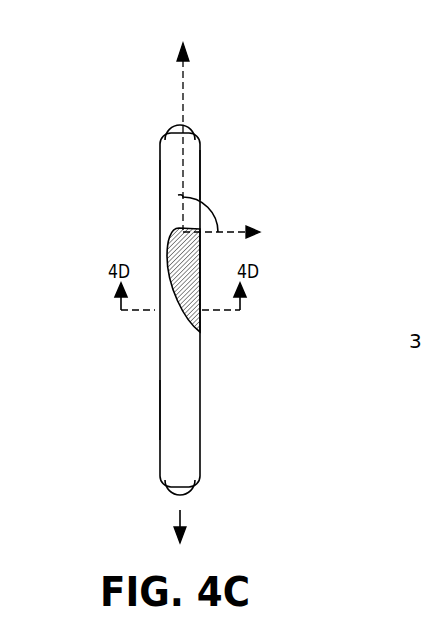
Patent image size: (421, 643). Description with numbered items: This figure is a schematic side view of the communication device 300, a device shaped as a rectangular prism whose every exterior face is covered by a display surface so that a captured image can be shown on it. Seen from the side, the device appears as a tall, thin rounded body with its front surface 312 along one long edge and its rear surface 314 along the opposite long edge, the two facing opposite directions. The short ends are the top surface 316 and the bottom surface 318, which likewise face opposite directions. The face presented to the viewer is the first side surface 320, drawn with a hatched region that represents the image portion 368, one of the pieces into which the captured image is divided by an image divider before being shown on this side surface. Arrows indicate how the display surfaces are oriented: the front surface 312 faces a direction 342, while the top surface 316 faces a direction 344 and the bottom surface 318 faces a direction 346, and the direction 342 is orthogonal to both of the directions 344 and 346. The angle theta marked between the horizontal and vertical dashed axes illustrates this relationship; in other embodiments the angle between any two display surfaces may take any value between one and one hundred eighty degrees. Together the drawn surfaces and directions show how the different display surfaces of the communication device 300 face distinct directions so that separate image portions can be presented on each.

The communication device 300 is at (128, 132).
The front surface 312 is at (200, 168).
The rear surface 314 is at (160, 188).
The top surface 316 is at (187, 132).
The bottom surface 318 is at (186, 488).
The first side surface 320 is at (192, 362).
The direction 342 is at (242, 222).
The direction 344 is at (186, 63).
The direction 346 is at (177, 526).
The image portion 368 is at (180, 410).